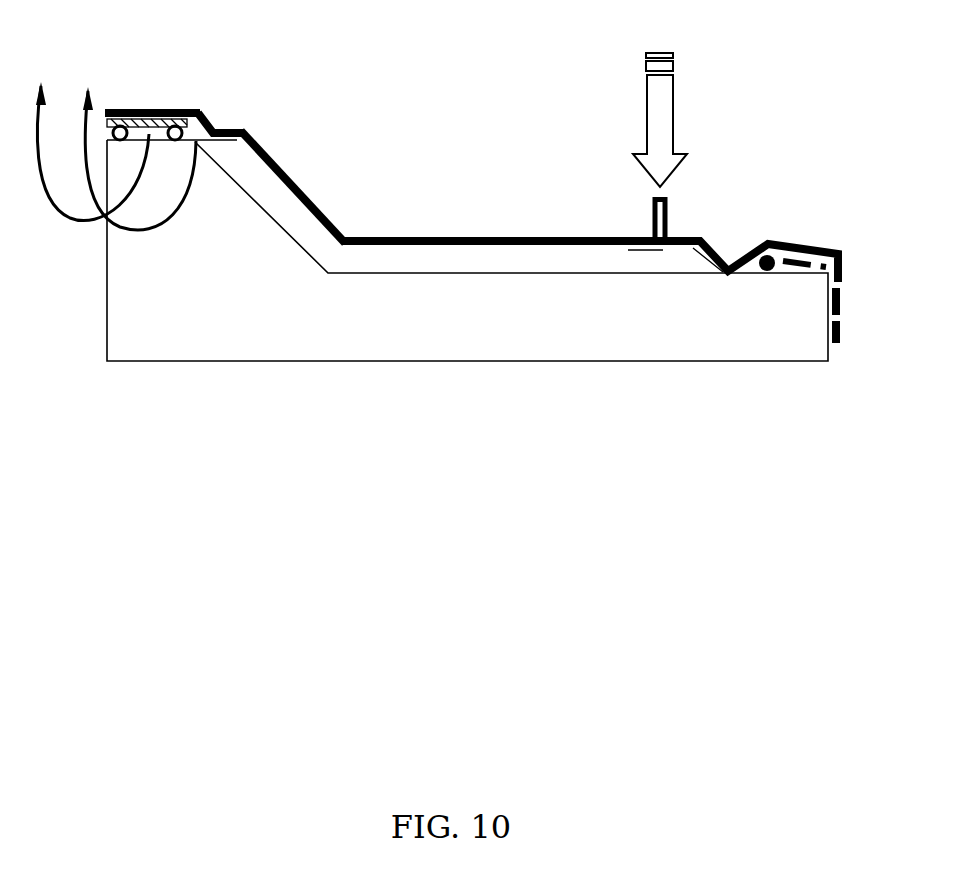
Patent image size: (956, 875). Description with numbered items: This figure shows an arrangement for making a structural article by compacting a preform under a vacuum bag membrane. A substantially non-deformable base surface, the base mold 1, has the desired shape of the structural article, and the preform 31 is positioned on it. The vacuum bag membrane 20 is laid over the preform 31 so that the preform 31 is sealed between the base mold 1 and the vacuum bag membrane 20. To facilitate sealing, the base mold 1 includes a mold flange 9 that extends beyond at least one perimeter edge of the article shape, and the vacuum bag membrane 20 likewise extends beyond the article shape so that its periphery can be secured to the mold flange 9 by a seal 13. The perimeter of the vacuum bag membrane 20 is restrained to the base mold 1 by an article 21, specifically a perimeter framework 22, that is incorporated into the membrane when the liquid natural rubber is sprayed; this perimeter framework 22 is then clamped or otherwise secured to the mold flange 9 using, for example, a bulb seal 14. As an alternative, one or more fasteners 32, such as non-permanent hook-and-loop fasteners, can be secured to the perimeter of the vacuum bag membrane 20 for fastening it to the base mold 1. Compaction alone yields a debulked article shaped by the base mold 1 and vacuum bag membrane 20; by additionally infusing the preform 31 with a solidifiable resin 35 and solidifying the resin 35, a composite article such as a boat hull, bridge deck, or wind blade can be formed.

The base mold 1 is at (200, 336).
The mold flange 9 is at (138, 138).
The perimeter framework 22 is at (180, 110).
The bulb seal 14 is at (200, 132).
The preform 31 is at (267, 192).
The vacuum bag membrane 20 is at (487, 237).
The article 21 is at (652, 212).
The solidifiable resin 35 is at (660, 103).
The seal 13 is at (779, 270).
The fasteners 32 is at (848, 308).